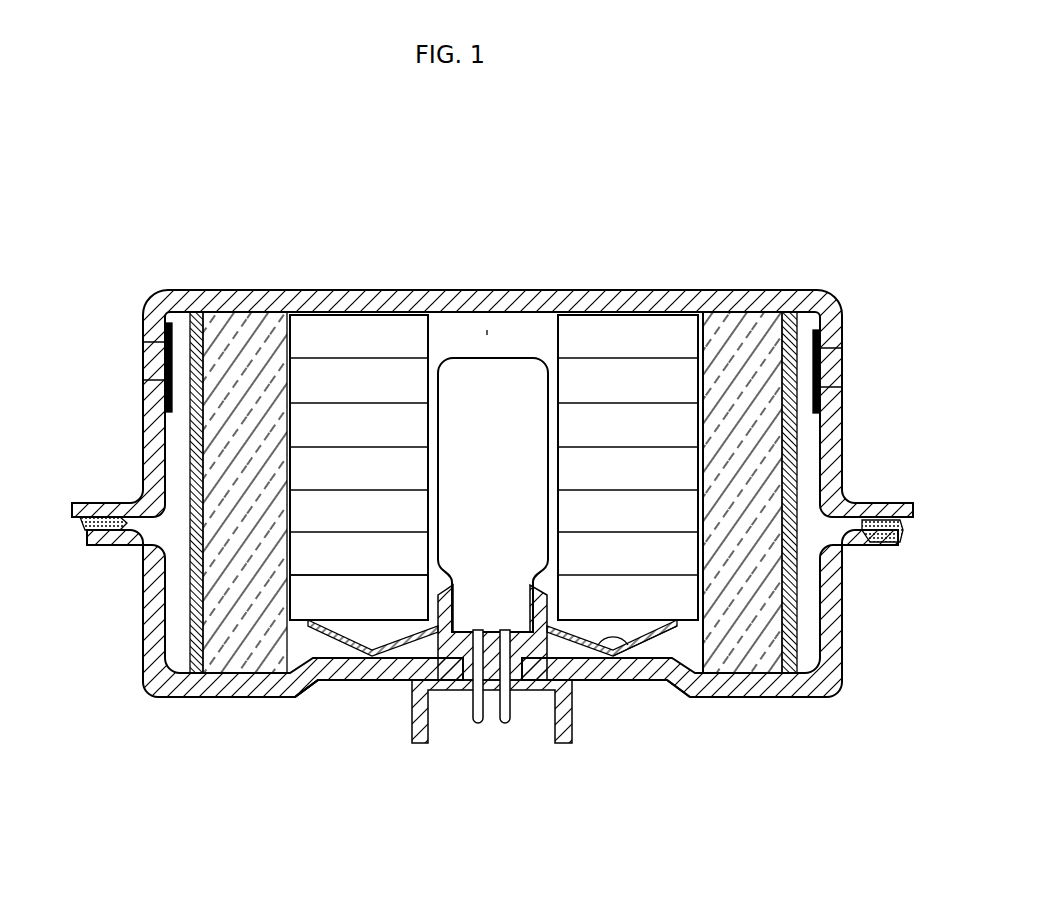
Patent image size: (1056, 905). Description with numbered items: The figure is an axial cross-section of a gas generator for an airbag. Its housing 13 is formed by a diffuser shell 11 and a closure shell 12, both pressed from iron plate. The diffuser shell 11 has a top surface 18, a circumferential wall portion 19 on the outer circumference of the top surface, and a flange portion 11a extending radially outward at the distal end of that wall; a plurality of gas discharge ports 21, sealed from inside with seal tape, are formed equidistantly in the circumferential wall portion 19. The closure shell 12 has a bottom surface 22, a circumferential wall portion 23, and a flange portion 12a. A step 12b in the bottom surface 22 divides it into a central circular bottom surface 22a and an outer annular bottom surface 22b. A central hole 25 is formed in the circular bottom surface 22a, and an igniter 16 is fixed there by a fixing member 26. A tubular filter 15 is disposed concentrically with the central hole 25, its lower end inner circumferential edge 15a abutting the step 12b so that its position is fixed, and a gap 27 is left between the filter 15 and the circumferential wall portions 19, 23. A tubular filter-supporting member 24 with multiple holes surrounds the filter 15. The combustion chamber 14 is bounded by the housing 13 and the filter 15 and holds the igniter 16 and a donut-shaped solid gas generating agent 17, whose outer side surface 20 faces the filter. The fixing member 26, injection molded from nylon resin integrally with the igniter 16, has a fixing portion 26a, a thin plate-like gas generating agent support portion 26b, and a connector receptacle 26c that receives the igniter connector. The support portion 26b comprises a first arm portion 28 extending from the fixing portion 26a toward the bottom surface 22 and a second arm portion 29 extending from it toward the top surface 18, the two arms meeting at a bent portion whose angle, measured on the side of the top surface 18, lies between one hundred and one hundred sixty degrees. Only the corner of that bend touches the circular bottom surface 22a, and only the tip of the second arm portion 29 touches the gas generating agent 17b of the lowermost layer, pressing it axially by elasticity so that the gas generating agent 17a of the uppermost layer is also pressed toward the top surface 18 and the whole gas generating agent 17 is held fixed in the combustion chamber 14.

The diffuser shell 11 is at (836, 452).
The flange portion 11a is at (867, 505).
The closure shell 12 is at (837, 597).
The flange portion 12a is at (875, 548).
The step 12b is at (308, 685).
The housing 13 is at (995, 437).
The combustion chamber 14 is at (487, 330).
The filter 15 is at (757, 323).
The lower end inner circumferential edge 15a is at (680, 697).
The igniter 16 is at (513, 444).
The gas generating agent 17 is at (368, 442).
The gas generating agent of the uppermost layer 17a is at (375, 330).
The gas generating agent of the lowermost layer 17b is at (312, 597).
The top surface 18 is at (728, 303).
The circumferential wall portion 19 is at (835, 417).
The side surface 20 is at (290, 387).
The gas discharge ports 21 is at (830, 368).
The bottom surface 22 is at (358, 798).
The circular bottom surface 22a is at (370, 680).
The annular bottom surface 22b is at (248, 697).
The circumferential wall portion 23 is at (832, 640).
The filter-supporting member 24 is at (190, 437).
The central hole 25 is at (508, 672).
The fixing member 26 is at (468, 683).
The fixing portion 26a is at (543, 607).
The gas generating agent support portion 26b is at (352, 637).
The connector receptacle 26c is at (570, 725).
The gap 27 is at (805, 692).
The first arm portion 28 is at (402, 650).
The second arm portion 29 is at (667, 633).